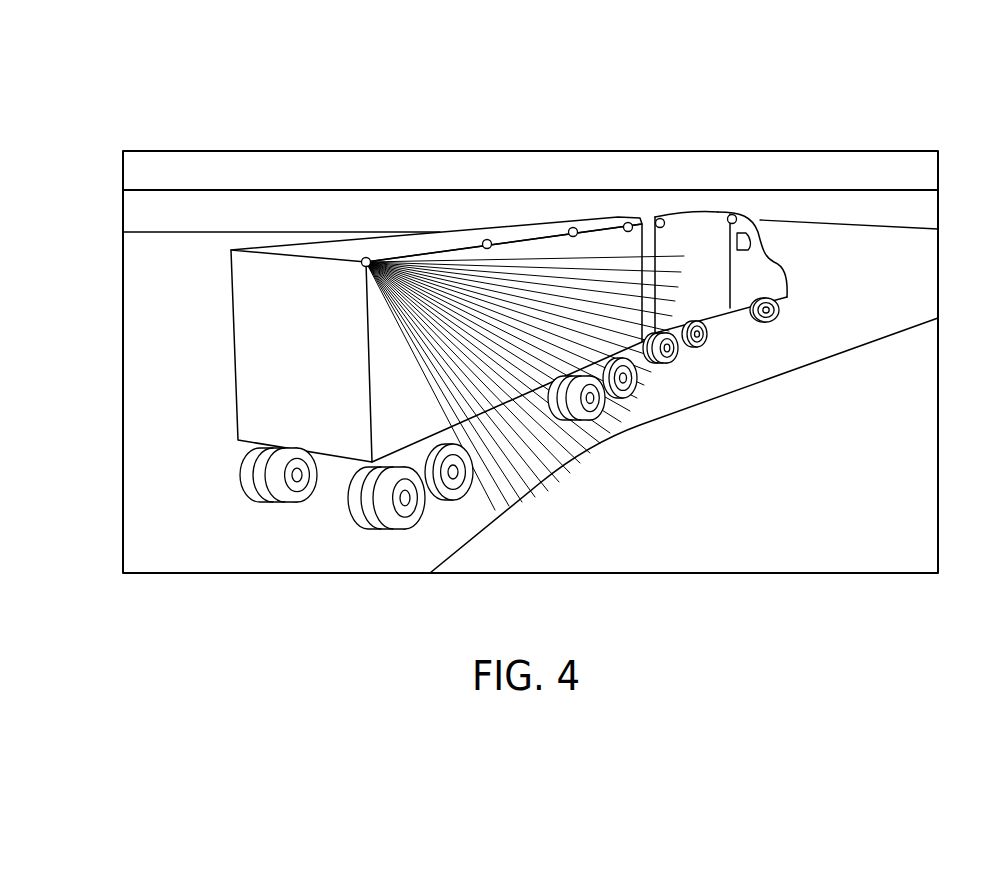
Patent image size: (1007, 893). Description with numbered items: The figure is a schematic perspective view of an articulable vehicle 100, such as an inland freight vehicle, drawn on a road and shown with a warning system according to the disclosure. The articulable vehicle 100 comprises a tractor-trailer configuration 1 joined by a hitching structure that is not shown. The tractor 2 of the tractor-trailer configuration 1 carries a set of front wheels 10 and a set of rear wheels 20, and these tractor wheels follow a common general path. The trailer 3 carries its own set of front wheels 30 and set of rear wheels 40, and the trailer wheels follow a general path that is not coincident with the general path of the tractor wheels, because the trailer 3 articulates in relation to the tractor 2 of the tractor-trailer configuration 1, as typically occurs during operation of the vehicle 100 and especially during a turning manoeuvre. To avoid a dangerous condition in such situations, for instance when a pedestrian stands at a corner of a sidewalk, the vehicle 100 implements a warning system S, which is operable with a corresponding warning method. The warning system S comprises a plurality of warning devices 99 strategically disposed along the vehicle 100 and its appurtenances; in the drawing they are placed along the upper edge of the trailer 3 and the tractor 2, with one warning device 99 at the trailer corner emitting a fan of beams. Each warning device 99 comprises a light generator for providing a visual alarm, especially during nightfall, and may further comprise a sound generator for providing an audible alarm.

The tractor-trailer configuration 1 is at (232, 58).
The warning system S is at (358, 105).
The tractor 2 is at (705, 205).
The trailer 3 is at (328, 236).
The set of front wheels 10 is at (784, 305).
The set of rear wheels 20 is at (707, 355).
The set of front wheels 30 is at (631, 409).
The set of rear wheels 40 is at (282, 510).
The warning device 99 is at (372, 256).
The articulable vehicle 100 is at (754, 226).